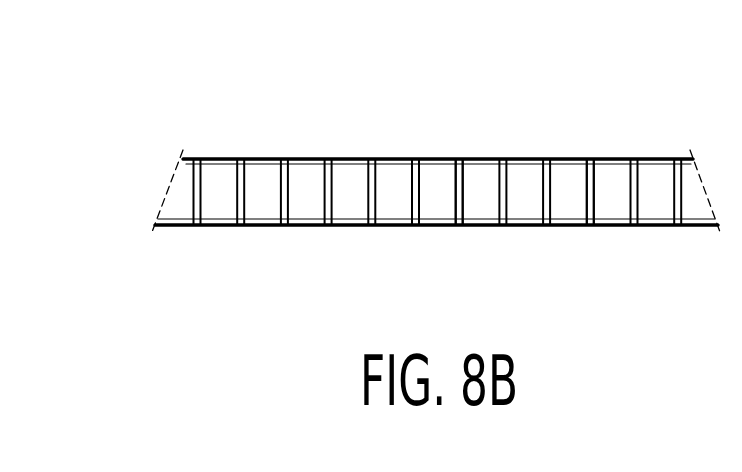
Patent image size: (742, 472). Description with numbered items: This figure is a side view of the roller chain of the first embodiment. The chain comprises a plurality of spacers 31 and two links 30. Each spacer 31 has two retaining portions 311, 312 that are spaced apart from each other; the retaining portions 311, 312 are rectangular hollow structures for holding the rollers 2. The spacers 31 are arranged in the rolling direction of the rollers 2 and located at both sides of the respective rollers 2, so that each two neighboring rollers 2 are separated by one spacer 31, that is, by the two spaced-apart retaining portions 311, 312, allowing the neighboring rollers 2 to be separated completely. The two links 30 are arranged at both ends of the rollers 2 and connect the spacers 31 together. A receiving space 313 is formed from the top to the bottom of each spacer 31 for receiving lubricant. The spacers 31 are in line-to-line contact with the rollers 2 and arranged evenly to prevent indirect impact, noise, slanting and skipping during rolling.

The roller 2 is at (612, 180).
The link 30 is at (257, 158).
The spacer 31 is at (322, 149).
The retaining portion 311 is at (458, 158).
The retaining portion 312 is at (463, 158).
The receiving space 313 is at (595, 195).